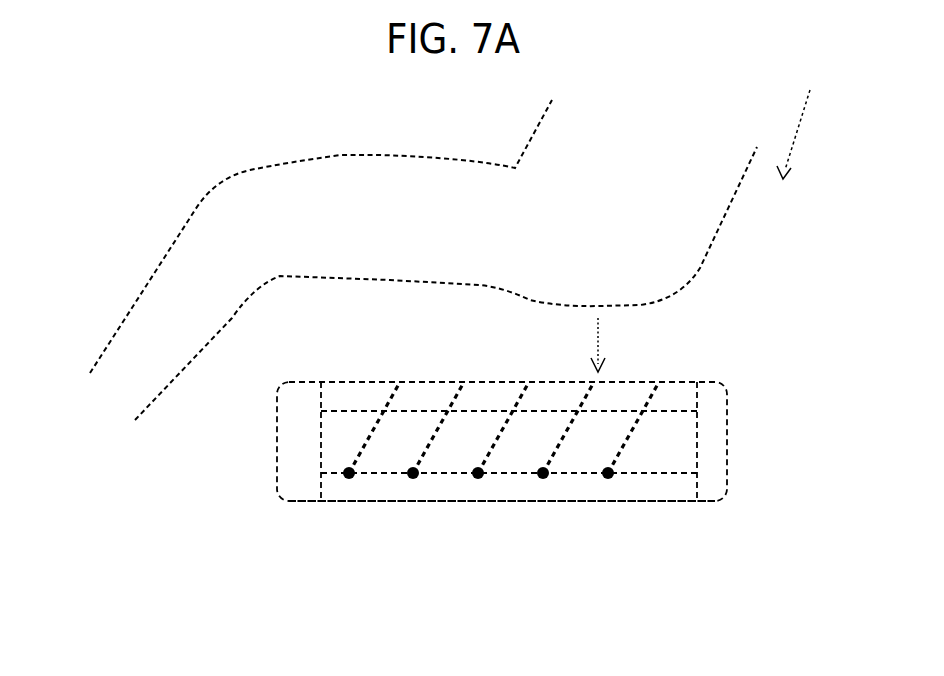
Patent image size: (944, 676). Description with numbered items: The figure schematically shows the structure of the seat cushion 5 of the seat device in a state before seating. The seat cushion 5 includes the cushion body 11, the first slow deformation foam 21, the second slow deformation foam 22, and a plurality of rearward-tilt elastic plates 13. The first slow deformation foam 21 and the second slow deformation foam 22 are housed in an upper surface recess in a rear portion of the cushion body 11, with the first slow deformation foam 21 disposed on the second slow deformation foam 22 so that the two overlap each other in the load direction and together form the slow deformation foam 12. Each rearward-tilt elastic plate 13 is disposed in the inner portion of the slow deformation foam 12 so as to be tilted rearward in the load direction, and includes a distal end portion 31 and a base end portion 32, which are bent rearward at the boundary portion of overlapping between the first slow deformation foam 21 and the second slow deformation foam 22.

The seat cushion 5 is at (258, 490).
The cushion body 11 is at (442, 502).
The slow deformation foam 12 is at (497, 496).
The first slow deformation foam 21 is at (343, 405).
The second slow deformation foam 22 is at (373, 450).
The rearward-tilt elastic plate 13 is at (573, 482).
The distal end portion 31 is at (642, 397).
The base end portion 32 is at (613, 440).